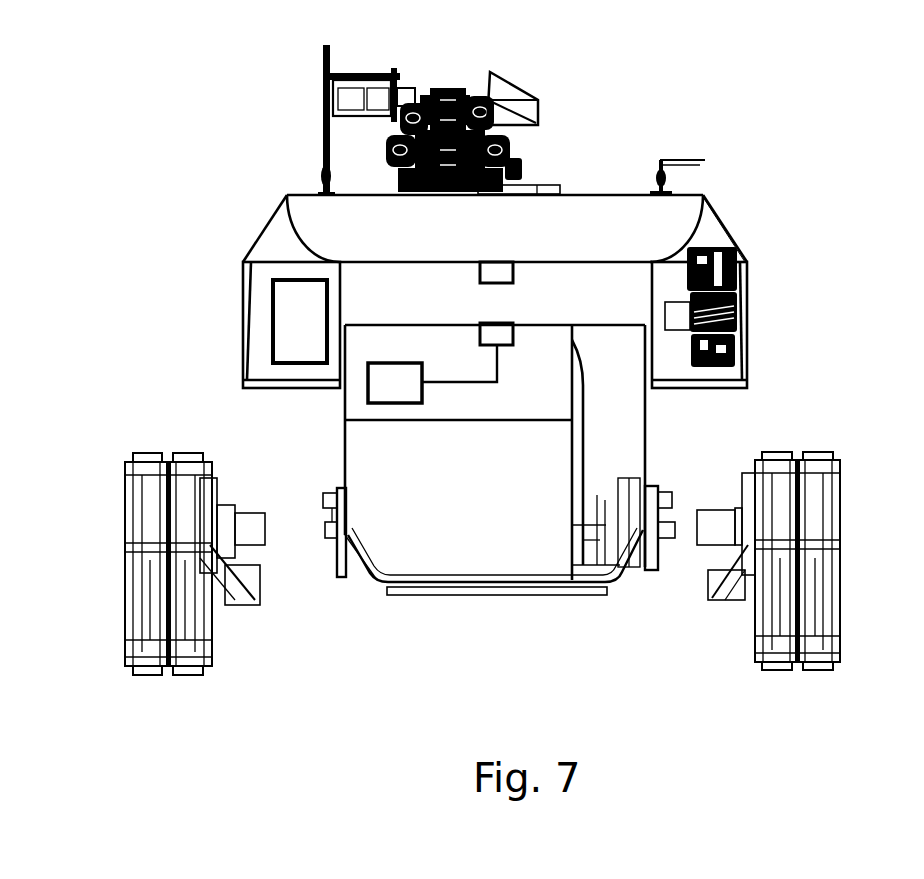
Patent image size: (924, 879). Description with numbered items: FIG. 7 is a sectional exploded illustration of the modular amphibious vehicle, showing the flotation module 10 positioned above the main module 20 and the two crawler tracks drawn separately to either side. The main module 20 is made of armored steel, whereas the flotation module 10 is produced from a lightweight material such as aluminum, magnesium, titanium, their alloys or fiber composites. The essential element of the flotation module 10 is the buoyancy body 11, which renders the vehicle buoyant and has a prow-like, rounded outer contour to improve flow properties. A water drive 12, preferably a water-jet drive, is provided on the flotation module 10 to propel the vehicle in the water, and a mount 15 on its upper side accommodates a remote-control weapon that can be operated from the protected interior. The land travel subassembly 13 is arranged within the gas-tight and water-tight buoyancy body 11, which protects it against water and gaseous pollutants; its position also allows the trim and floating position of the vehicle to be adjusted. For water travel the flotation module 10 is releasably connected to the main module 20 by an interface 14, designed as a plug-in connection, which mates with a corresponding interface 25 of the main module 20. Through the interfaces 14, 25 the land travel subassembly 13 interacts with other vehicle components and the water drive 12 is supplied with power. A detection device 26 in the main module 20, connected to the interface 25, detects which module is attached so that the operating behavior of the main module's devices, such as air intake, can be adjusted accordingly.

The flotation module 10 is at (238, 222).
The buoyancy body 11 is at (722, 215).
The water drive 12 is at (285, 332).
The land travel subassembly 13 is at (737, 306).
The interface 14 is at (493, 272).
The mount 15 is at (540, 139).
The main module 20 is at (405, 618).
The interface 25 is at (500, 331).
The detection device 26 is at (390, 383).